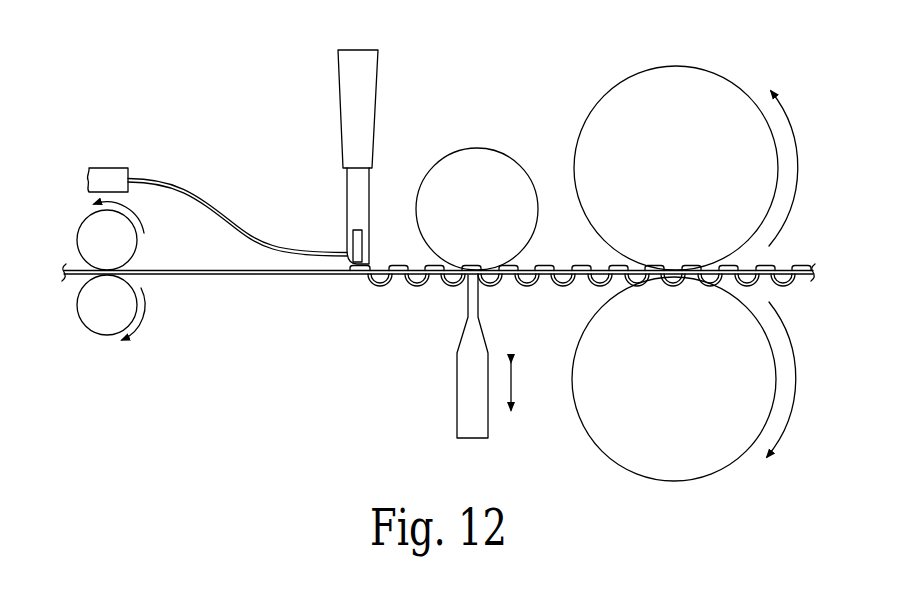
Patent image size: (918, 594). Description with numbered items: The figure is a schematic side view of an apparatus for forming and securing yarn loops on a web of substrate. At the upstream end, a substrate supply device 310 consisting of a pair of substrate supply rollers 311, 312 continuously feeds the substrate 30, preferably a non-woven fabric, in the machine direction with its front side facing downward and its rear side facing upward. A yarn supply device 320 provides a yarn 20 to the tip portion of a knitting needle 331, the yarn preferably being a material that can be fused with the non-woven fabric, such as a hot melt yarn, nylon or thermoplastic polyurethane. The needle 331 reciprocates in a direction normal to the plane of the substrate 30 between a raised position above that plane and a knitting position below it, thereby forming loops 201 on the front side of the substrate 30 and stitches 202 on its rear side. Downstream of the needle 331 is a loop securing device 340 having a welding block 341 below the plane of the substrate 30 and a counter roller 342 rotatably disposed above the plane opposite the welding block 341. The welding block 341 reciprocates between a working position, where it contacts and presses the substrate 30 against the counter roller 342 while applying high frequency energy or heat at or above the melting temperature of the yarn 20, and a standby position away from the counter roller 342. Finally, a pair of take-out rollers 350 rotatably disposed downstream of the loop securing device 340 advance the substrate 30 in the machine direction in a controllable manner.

The yarn 20 is at (182, 187).
The substrate 30 is at (258, 272).
The loops 201 is at (375, 287).
The stitches 202 is at (398, 263).
The substrate supply device 310 is at (142, 335).
The substrate supply roller 311 is at (103, 328).
The substrate supply roller 312 is at (127, 238).
The yarn supply device 320 is at (110, 170).
The knitting needle 331 is at (367, 72).
The loop securing device 340 is at (435, 261).
The welding block 341 is at (472, 417).
The counter roller 342 is at (473, 167).
The take-out rollers 350 is at (700, 88).